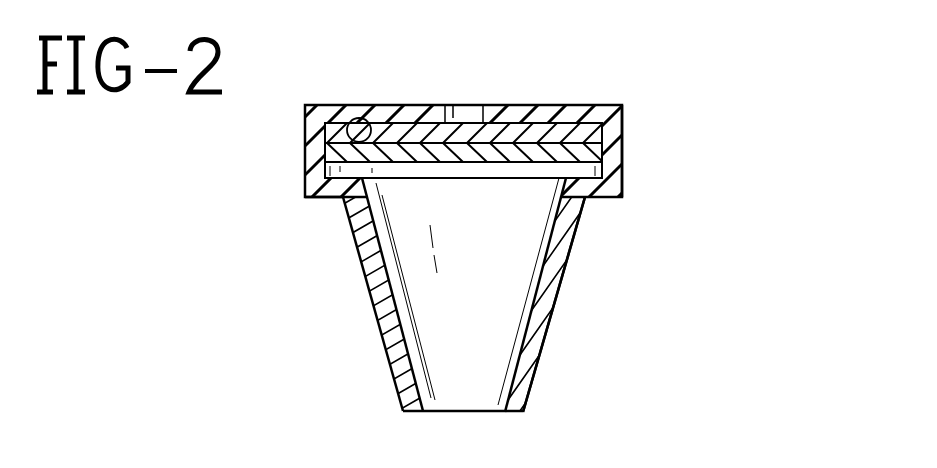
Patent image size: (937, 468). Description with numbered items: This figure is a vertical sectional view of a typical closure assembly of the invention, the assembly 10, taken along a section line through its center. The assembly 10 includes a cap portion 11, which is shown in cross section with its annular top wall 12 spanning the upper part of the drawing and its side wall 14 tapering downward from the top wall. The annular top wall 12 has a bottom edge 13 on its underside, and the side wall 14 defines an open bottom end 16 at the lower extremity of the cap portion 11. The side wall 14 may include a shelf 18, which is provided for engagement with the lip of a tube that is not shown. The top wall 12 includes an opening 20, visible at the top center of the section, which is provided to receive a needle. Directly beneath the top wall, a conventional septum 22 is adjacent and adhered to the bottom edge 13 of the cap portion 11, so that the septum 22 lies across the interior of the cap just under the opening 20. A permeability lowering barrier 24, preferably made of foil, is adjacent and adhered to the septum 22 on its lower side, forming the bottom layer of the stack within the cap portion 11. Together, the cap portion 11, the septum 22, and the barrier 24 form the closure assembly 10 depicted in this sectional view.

The assembly 10 is at (785, 260).
The cap portion 11 is at (572, 310).
The annular top wall 12 is at (600, 104).
The bottom edge 13 is at (355, 118).
The side wall 14 is at (380, 326).
The open bottom end 16 is at (463, 403).
The shelf 18 is at (322, 198).
The opening 20 is at (463, 114).
The septum 22 is at (604, 141).
The permeability lowering barrier 24 is at (605, 166).